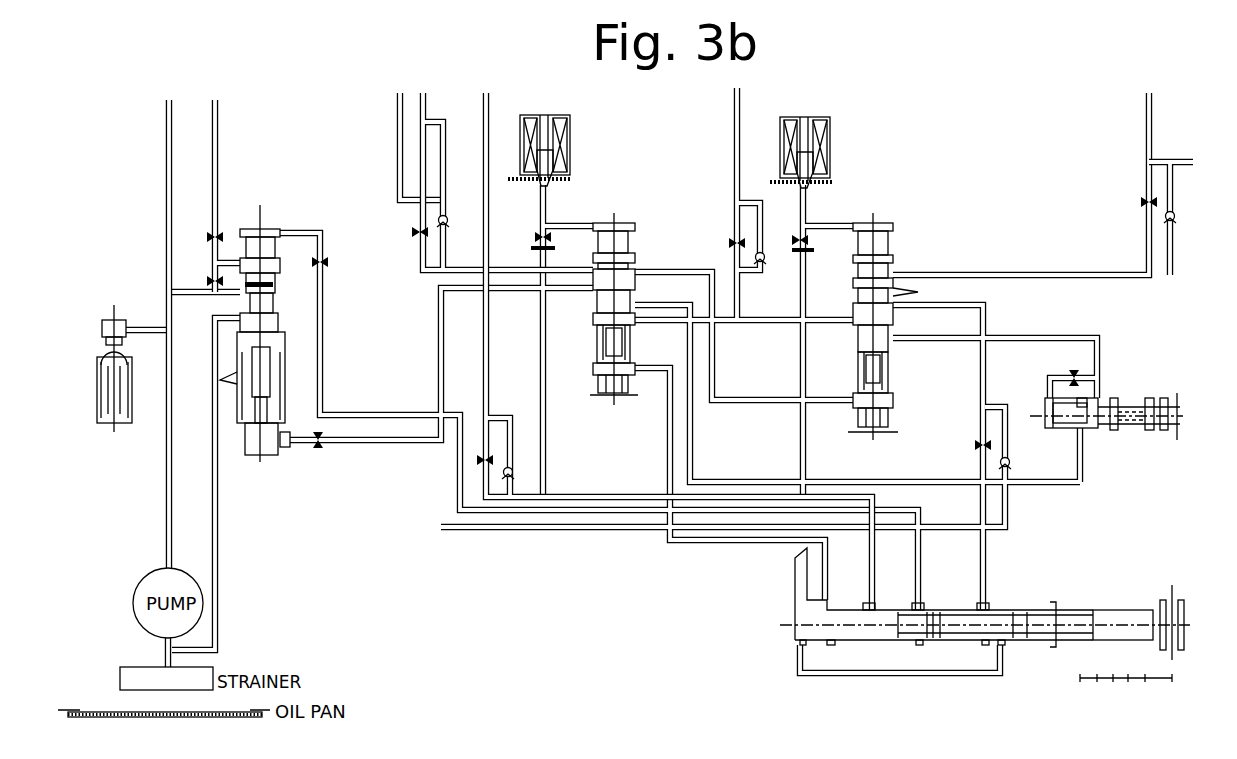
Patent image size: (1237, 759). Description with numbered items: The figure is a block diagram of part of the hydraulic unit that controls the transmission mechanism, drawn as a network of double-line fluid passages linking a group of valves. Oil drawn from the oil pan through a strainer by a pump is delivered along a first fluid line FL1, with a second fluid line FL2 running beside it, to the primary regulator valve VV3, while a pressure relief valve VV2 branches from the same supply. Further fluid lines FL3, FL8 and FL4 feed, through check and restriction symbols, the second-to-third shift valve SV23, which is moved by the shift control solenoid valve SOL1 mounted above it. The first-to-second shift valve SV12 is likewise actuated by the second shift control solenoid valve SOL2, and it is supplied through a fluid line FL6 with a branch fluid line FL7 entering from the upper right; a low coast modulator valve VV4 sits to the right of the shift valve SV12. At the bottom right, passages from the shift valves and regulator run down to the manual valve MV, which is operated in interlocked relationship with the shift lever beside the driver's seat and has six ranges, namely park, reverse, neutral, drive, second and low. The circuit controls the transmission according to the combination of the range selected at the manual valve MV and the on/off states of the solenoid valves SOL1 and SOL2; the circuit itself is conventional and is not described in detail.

The fluid line 1 FL1 is at (169, 320).
The fluid line 2 FL2 is at (220, 182).
The fluid line 3 FL3 is at (409, 136).
The fluid line 4 FL4 is at (672, 341).
The fluid line 6 FL6 is at (1033, 173).
The fluid line 7 FL7 is at (1192, 212).
The fluid line 8 FL8 is at (502, 171).
The pressure relief valve VV2 is at (97, 397).
The primary regulator valve VV3 is at (268, 229).
The low coast modulator valve VV4 is at (1110, 398).
The shift control solenoid valve SOL1 is at (570, 130).
The shift control solenoid valve SOL2 is at (832, 132).
The 2-3 shift valve SV23 is at (616, 398).
The 1-2 shift valve SV12 is at (893, 400).
The manual valve MV is at (1120, 610).